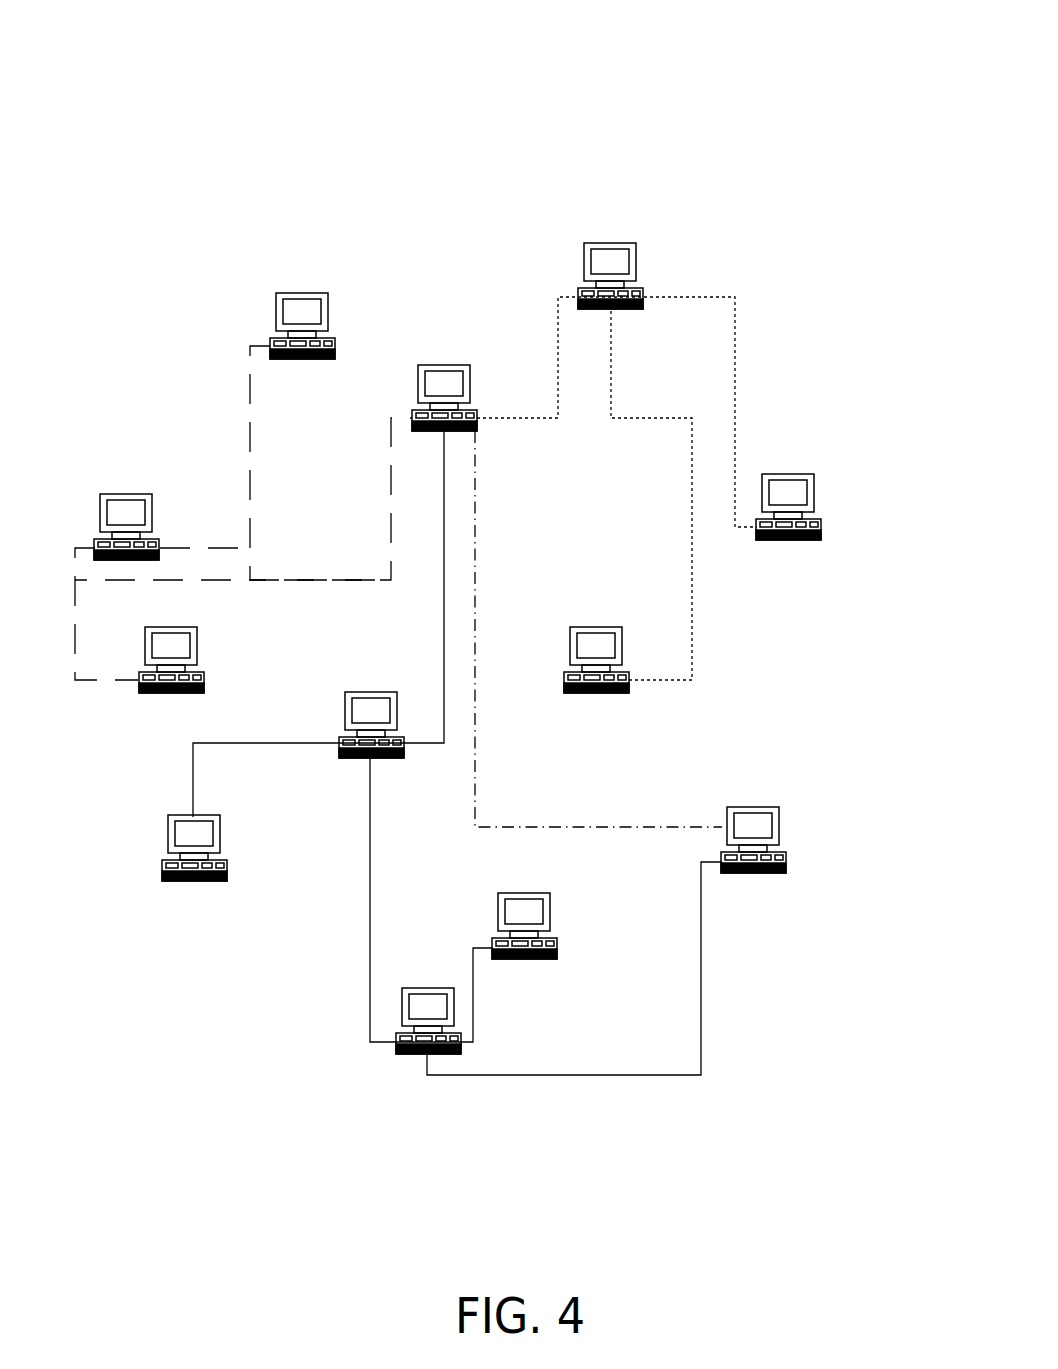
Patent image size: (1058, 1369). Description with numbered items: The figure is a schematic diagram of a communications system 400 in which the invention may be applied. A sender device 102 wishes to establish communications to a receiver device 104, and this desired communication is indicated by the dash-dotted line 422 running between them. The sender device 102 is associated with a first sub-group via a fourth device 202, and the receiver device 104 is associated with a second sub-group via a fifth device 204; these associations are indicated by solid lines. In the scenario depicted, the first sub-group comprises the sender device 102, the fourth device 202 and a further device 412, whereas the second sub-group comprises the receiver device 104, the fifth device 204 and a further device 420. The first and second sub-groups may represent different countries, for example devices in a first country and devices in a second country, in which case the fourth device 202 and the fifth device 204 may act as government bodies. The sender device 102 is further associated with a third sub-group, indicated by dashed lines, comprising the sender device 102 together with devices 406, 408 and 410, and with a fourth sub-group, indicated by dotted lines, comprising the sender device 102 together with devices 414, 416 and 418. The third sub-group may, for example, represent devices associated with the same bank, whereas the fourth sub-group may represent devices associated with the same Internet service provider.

The communications system 400 is at (757, 124).
The sender device 102 is at (443, 365).
The receiver device 104 is at (755, 807).
The fourth device 202 is at (368, 692).
The fifth device 204 is at (428, 988).
The device 406 is at (302, 292).
The device 408 is at (130, 494).
The device 410 is at (170, 696).
The device 412 is at (195, 882).
The device 414 is at (612, 243).
The device 416 is at (790, 474).
The device 418 is at (598, 627).
The device 420 is at (553, 915).
The dash-dotted line 422 is at (475, 760).